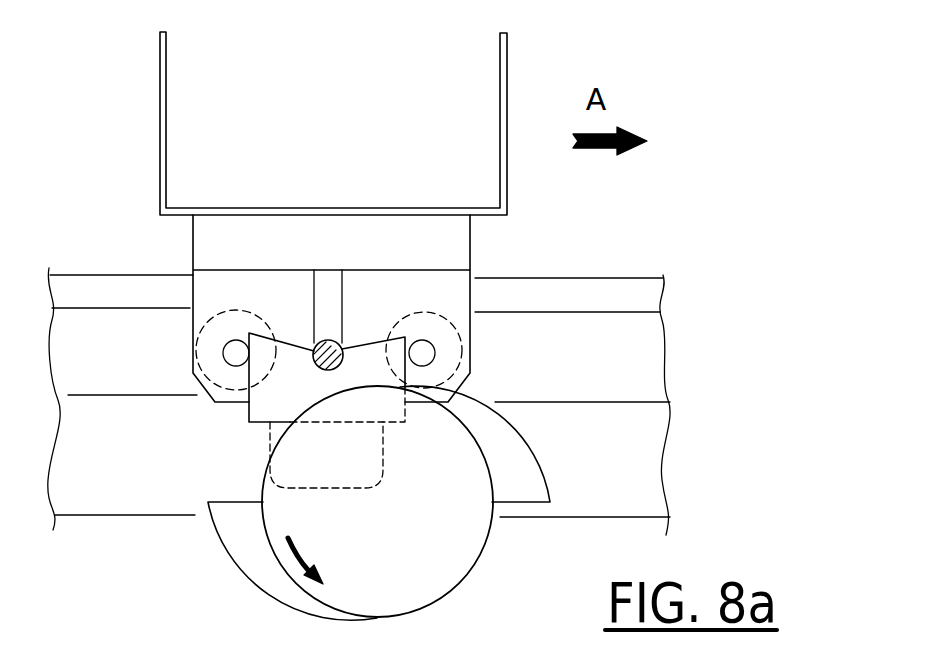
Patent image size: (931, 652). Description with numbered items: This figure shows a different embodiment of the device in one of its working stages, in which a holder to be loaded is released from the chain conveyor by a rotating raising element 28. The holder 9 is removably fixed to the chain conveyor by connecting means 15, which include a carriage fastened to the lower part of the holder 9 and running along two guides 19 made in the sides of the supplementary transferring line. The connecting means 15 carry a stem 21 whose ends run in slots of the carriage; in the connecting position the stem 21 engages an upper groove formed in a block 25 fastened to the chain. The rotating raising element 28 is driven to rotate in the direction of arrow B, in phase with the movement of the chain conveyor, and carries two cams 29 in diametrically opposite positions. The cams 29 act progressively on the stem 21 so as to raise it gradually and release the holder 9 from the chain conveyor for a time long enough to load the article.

The holder 9 is at (502, 63).
The connecting means 15 is at (166, 237).
The guides 19 is at (612, 402).
The stem 21 is at (326, 340).
The block 25 is at (263, 412).
The rotating raising element 28 is at (524, 416).
The cams 29 is at (522, 457).